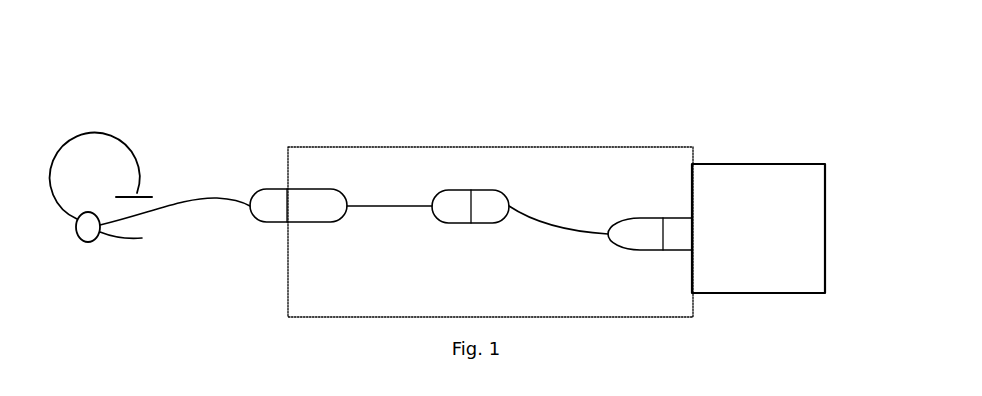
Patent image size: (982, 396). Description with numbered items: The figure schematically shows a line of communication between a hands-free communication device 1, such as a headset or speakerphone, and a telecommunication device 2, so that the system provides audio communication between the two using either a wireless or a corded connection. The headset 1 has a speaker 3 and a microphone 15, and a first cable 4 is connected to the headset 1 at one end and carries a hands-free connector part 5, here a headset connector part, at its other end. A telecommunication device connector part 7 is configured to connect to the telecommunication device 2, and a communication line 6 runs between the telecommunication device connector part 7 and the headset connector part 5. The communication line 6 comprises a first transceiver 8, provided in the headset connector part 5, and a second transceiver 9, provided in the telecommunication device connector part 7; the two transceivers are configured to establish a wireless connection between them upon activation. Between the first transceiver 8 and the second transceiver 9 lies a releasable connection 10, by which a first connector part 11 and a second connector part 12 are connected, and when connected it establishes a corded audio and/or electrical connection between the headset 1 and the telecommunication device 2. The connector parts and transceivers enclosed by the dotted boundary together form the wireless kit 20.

The hands-free communication device 1 is at (97, 142).
The telecommunication device 2 is at (753, 160).
The speaker 3 is at (82, 236).
The first cable 4 is at (190, 205).
The hands-free connector part 5 is at (265, 223).
The communication line 6 is at (418, 170).
The telecommunication device connector part 7 is at (675, 250).
The first transceiver 8 is at (323, 189).
The second transceiver 9 is at (642, 217).
The releasable connection 10 is at (471, 224).
The first connector part 11 is at (440, 223).
The second connector part 12 is at (497, 223).
The microphone 15 is at (122, 240).
The wireless kit 20 is at (365, 147).